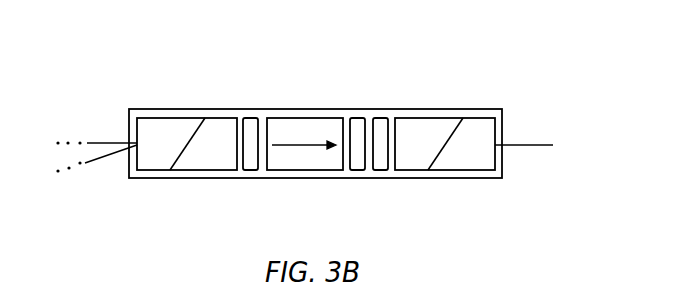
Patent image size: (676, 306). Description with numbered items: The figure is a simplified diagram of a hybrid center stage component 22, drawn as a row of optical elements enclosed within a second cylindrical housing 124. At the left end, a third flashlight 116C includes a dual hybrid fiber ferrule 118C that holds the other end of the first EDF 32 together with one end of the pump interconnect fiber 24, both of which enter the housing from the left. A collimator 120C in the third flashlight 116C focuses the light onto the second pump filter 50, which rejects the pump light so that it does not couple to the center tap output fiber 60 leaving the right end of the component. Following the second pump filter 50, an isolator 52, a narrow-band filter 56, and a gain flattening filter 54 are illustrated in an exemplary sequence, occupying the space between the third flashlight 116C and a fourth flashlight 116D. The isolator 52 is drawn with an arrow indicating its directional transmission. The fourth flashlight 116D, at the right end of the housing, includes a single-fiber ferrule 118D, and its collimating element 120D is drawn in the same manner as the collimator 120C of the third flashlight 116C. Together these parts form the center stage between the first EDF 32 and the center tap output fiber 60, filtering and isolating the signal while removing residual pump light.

The hybrid center stage component 22 is at (381, 63).
The pump interconnect fiber 24 is at (98, 158).
The first EDF 32 is at (87, 142).
The second pump filter 50 is at (252, 109).
The isolator 52 is at (305, 178).
The gain flattening filter 54 is at (383, 109).
The narrow-band filter 56 is at (357, 109).
The center tap output fiber 60 is at (542, 145).
The third flashlight 116C is at (172, 107).
The fourth flashlight 116D is at (472, 107).
The dual hybrid fiber ferrule 118C is at (152, 178).
The single-fiber ferrule 118D is at (463, 178).
The collimator 120C is at (203, 178).
The optic axis indicator 120D is at (410, 178).
The second cylindrical housing 124 is at (305, 109).